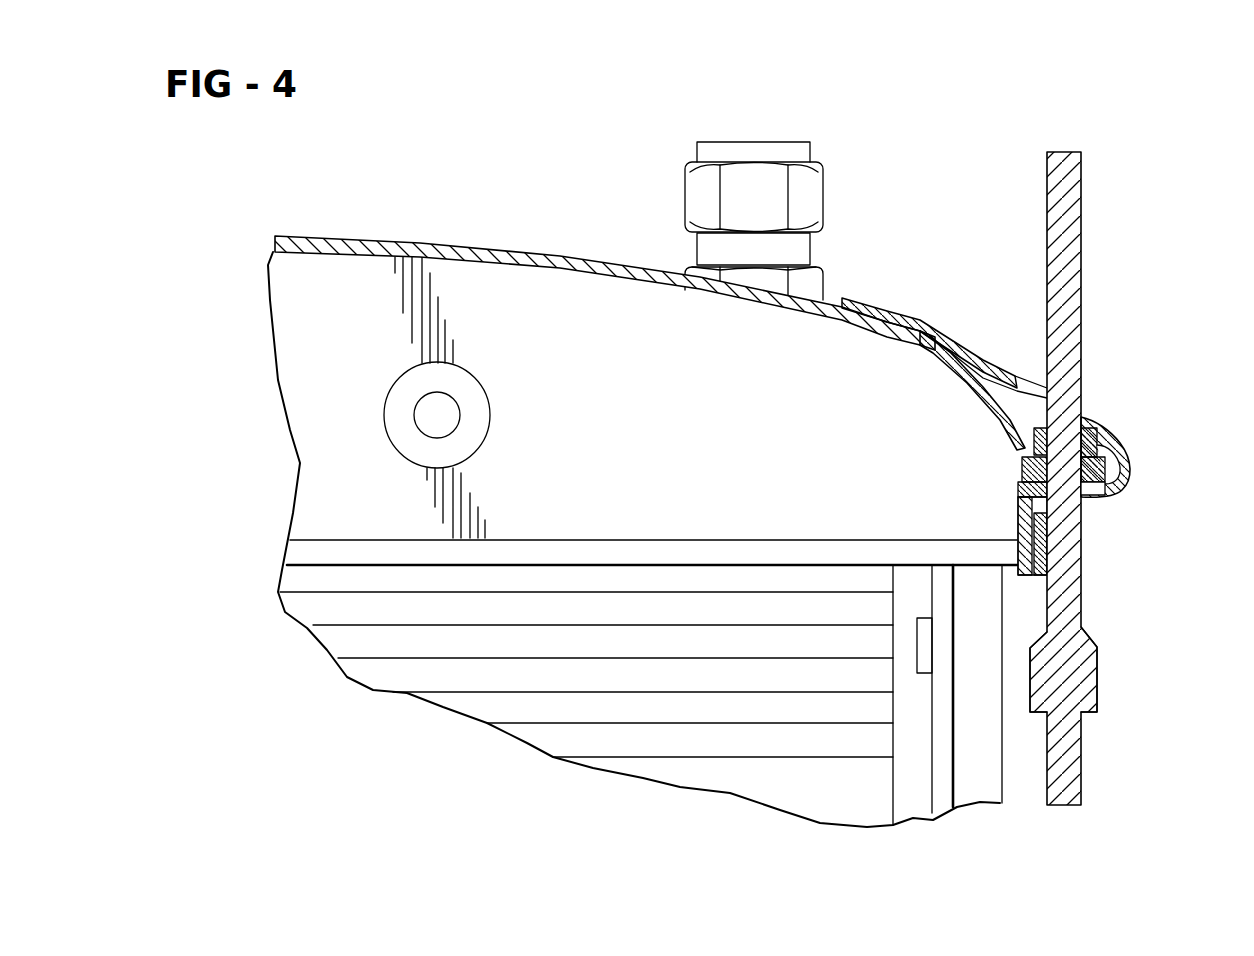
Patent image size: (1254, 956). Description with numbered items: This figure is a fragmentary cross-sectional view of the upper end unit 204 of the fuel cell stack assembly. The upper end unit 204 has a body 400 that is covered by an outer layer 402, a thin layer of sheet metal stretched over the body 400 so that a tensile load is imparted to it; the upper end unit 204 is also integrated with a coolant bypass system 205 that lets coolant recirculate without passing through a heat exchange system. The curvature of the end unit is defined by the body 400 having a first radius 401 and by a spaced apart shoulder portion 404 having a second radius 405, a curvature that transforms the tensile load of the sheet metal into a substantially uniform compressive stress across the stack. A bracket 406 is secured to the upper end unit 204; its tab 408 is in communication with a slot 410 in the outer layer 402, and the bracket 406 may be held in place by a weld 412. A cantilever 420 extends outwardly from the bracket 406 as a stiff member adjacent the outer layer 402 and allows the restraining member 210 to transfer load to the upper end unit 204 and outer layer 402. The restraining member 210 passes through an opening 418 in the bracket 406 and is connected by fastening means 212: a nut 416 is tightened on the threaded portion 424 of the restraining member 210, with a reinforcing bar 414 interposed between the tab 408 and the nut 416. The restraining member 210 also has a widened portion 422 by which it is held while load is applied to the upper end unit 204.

The upper end unit 204 is at (371, 183).
The coolant bypass system 205 is at (405, 387).
The restraining member 210 is at (1083, 768).
The fastening means 212 is at (1138, 463).
The body 400 is at (305, 298).
The first radius 401 is at (428, 201).
The outer layer 402 is at (530, 241).
The shoulder portion 404 is at (977, 342).
The second radius 405 is at (935, 356).
The bracket 406 is at (935, 331).
The tab 408 is at (1020, 489).
The slot 410 is at (990, 460).
The weld 412 is at (1030, 540).
The reinforcing bar 414 is at (1120, 482).
The nut 416 is at (1038, 428).
The opening 418 is at (1113, 426).
The cantilever 420 is at (884, 298).
The widened portion 422 is at (1098, 690).
The threaded portion 424 is at (1070, 437).